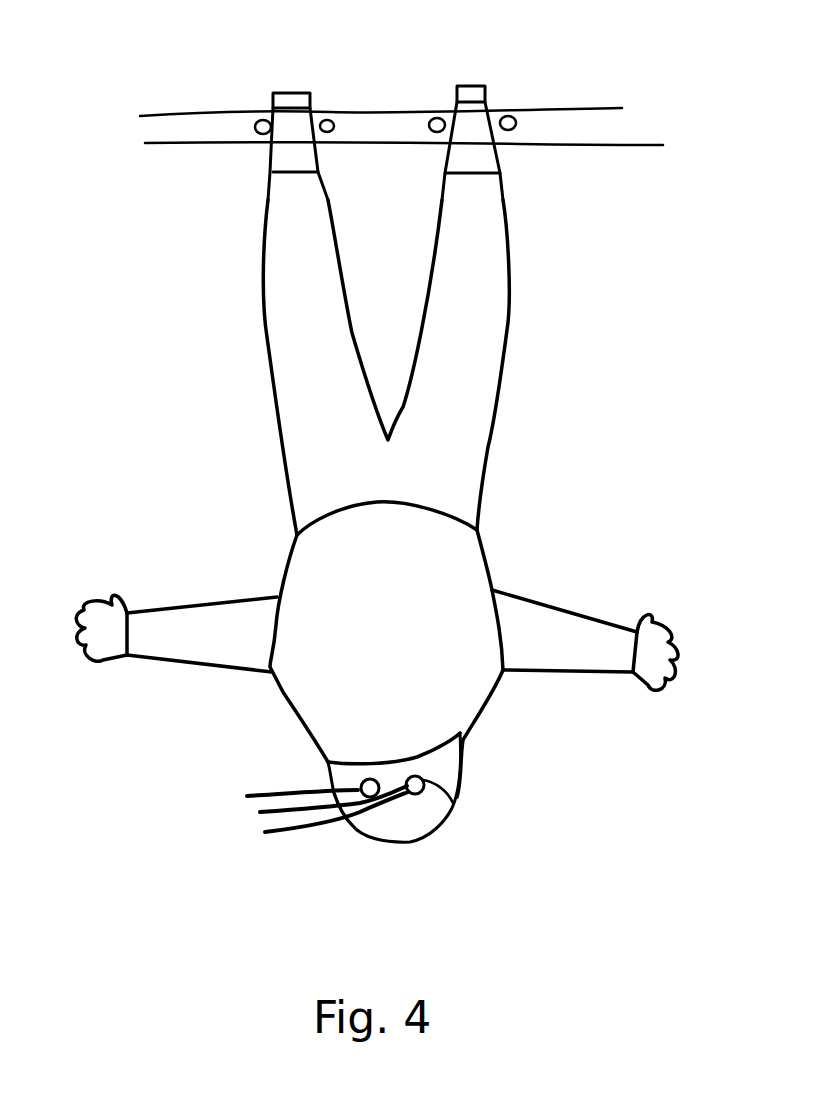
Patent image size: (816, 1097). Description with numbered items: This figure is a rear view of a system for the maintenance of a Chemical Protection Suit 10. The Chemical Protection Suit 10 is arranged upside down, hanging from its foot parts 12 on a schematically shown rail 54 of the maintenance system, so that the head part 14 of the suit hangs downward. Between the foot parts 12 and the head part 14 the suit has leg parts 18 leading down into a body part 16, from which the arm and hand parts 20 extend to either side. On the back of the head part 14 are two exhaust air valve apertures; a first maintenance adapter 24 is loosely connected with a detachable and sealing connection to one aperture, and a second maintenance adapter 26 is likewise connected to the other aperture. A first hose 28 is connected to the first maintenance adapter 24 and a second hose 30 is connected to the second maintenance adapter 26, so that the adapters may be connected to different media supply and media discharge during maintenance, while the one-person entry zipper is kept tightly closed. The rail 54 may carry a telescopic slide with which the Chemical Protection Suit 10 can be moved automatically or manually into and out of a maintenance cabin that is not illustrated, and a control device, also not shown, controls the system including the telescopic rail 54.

The Chemical Protection Suit 10 is at (457, 570).
The foot parts 12 is at (293, 130).
The head part 14 is at (418, 820).
The body part 16 is at (453, 687).
The leg parts 18 is at (285, 313).
The arm and hand parts 20 is at (185, 643).
The first maintenance adapter 24 is at (453, 805).
The second maintenance adapter 26 is at (357, 777).
The first hose 28 is at (360, 825).
The second hose 30 is at (258, 807).
The rail 54 is at (200, 127).